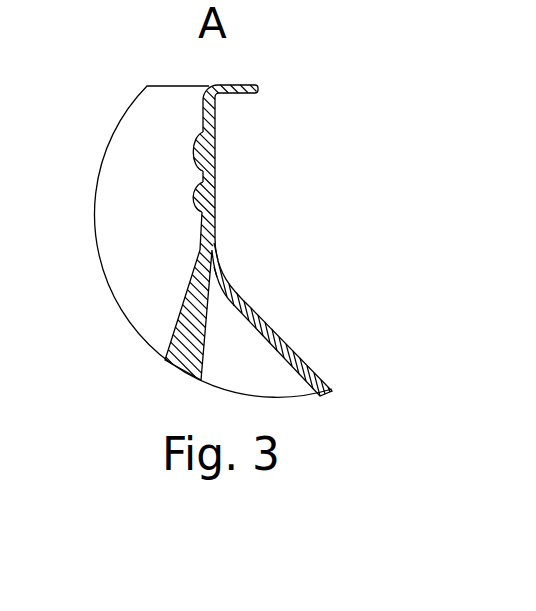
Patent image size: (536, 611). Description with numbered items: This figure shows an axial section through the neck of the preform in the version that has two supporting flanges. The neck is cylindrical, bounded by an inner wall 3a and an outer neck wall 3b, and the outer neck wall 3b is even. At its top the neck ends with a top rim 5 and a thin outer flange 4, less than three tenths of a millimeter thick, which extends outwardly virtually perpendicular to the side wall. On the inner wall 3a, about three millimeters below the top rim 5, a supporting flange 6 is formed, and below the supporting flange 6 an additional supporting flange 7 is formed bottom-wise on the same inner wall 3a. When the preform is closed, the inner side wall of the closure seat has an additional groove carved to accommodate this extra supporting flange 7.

The inner wall 3a is at (202, 115).
The outer neck wall 3b is at (217, 160).
The outer flange 4 is at (236, 83).
The top rim 5 is at (204, 91).
The supporting flange 6 is at (191, 156).
The additional supporting flange 7 is at (190, 204).